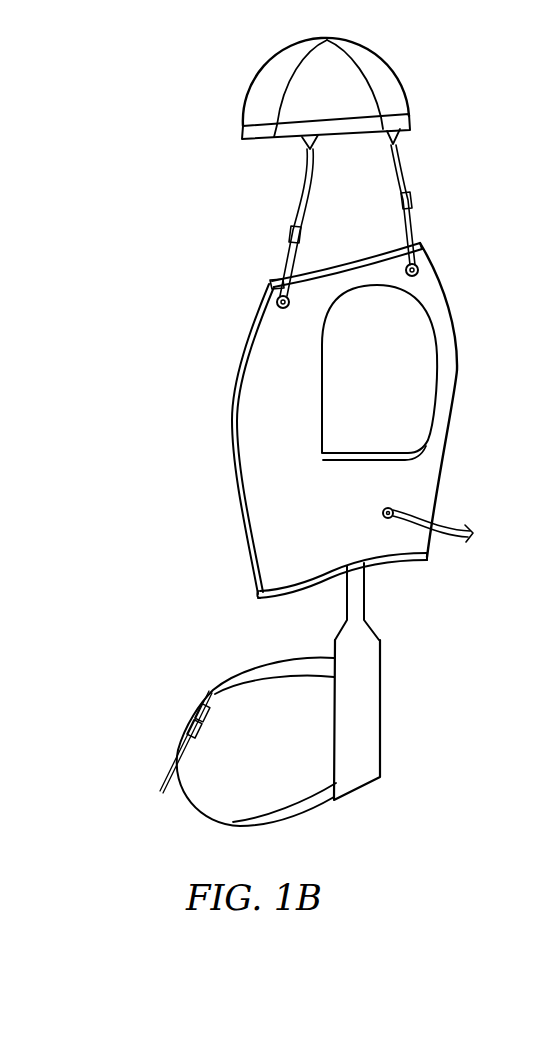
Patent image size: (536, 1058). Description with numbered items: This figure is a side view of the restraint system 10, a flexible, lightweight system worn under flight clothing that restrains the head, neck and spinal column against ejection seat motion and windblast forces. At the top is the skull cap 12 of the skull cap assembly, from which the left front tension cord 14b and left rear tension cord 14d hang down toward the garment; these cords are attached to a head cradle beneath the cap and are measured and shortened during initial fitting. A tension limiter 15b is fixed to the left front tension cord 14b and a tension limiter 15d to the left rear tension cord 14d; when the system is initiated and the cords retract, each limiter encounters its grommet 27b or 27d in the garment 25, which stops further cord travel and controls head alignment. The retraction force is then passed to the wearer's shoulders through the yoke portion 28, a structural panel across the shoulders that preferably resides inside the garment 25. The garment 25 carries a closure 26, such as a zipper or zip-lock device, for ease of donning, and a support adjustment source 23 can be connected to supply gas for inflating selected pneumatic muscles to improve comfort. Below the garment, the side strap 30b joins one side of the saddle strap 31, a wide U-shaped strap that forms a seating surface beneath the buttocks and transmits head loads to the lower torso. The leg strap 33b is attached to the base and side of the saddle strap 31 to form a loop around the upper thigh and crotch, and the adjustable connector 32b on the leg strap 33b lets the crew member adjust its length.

The restraint system 10 is at (165, 150).
The skull cap 12 is at (255, 112).
The left front tension cord 14b is at (307, 176).
The left rear tension cord 14d is at (399, 165).
The tension limiter 15b is at (290, 236).
The tension limiter 15d is at (412, 201).
The support adjustment source 23 is at (451, 533).
The garment 25 is at (292, 444).
The closure 26 is at (242, 518).
The grommet 27b is at (280, 299).
The grommet 27d is at (416, 275).
The yoke portion 28 is at (315, 308).
The side strap 30b is at (352, 586).
The saddle strap 31 is at (368, 712).
The adjustable connector 32b is at (195, 705).
The leg strap 33b is at (295, 808).